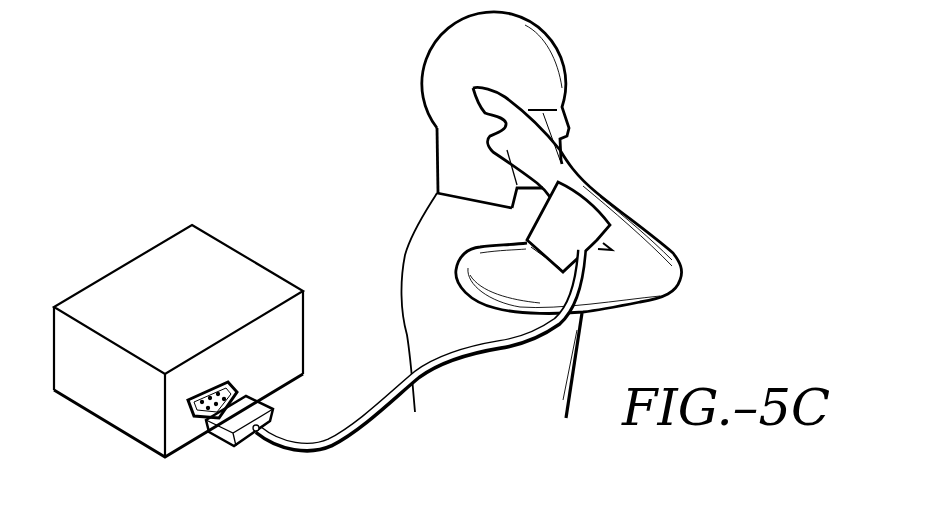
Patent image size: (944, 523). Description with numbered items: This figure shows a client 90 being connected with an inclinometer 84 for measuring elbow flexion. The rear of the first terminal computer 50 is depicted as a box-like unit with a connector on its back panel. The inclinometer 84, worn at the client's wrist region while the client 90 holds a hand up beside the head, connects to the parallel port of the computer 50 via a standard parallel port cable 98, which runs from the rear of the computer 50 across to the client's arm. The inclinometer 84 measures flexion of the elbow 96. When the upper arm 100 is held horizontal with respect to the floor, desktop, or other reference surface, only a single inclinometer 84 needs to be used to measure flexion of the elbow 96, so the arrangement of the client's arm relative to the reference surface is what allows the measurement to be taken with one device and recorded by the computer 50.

The first terminal computer 50 is at (184, 433).
The inclinometer 84 is at (583, 212).
The client 90 is at (543, 67).
The elbow 96 is at (650, 278).
The parallel port cable 98 is at (363, 420).
The upper arm 100 is at (525, 290).